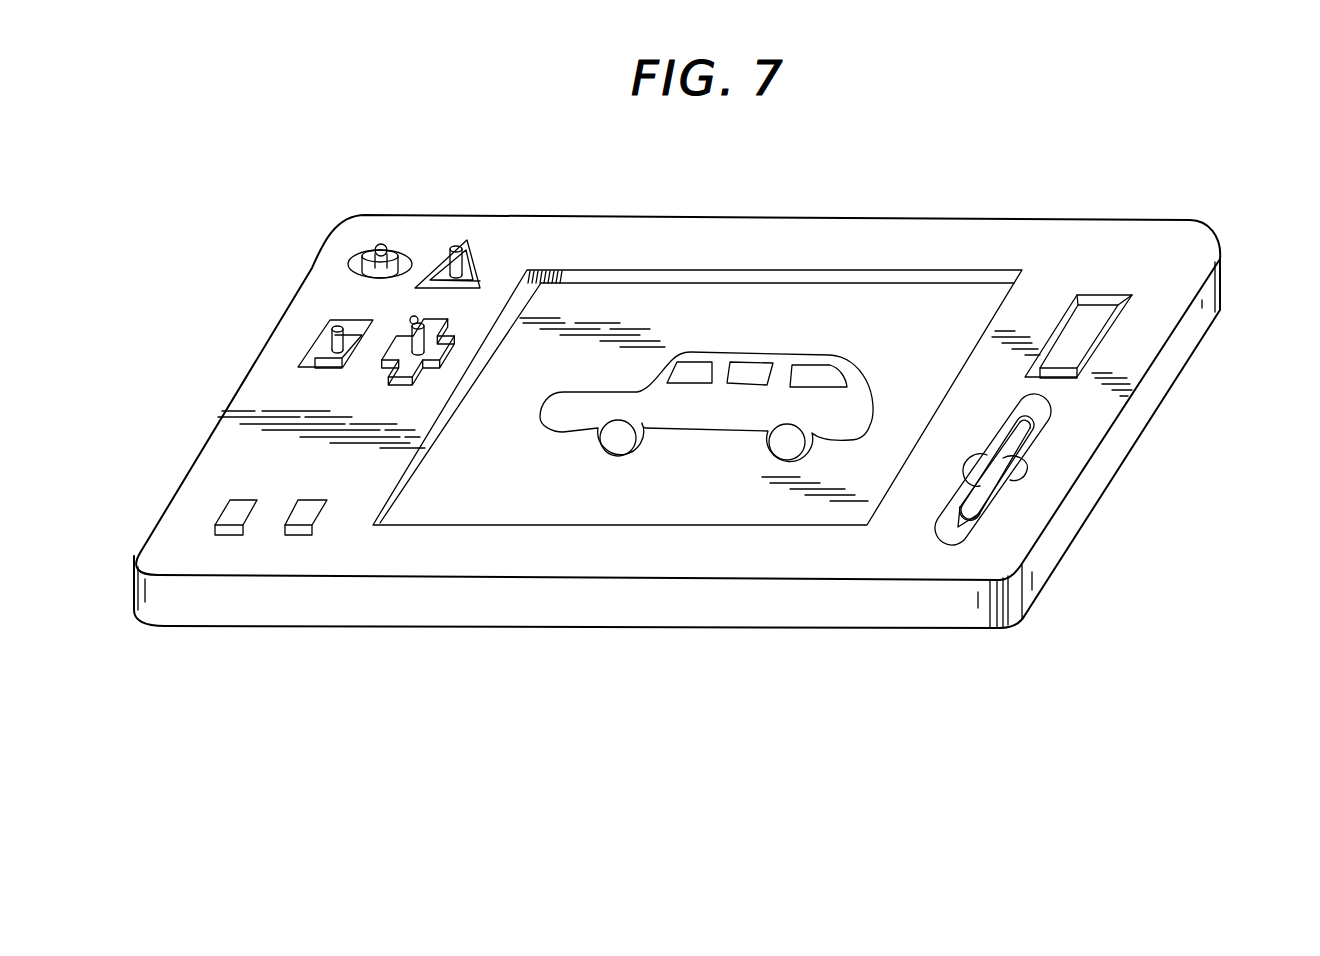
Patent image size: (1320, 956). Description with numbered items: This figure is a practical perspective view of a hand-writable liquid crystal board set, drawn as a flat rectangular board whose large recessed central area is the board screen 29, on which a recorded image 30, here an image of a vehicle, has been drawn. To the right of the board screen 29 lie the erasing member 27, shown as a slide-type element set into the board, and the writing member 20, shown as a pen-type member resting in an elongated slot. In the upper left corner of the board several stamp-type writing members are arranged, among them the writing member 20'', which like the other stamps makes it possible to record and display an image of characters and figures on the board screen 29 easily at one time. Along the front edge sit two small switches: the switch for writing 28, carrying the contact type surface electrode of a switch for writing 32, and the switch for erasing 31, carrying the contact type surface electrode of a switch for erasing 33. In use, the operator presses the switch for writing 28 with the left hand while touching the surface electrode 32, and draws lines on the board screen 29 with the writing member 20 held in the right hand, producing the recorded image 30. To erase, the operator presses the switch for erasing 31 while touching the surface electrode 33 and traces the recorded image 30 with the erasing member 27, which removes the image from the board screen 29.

The writing member 20 is at (1059, 469).
The triangular push-button switch 20'' is at (461, 221).
The erasing member 27 is at (1078, 345).
The switch for writing 28 is at (293, 530).
The board screen 29 is at (870, 310).
The recorded image 30 is at (715, 420).
The switch for erasing 31 is at (230, 527).
The contact type surface electrode of a switch for writing 32 is at (307, 510).
The contact type surface electrode of a switch for erasing 33 is at (233, 508).